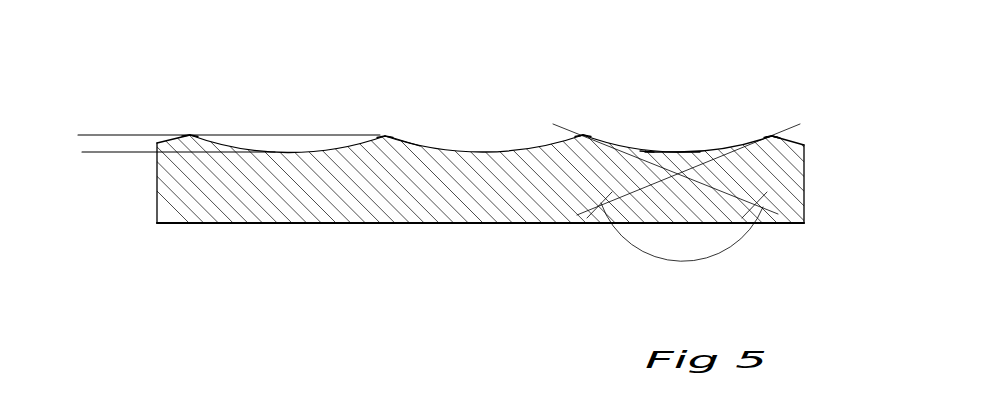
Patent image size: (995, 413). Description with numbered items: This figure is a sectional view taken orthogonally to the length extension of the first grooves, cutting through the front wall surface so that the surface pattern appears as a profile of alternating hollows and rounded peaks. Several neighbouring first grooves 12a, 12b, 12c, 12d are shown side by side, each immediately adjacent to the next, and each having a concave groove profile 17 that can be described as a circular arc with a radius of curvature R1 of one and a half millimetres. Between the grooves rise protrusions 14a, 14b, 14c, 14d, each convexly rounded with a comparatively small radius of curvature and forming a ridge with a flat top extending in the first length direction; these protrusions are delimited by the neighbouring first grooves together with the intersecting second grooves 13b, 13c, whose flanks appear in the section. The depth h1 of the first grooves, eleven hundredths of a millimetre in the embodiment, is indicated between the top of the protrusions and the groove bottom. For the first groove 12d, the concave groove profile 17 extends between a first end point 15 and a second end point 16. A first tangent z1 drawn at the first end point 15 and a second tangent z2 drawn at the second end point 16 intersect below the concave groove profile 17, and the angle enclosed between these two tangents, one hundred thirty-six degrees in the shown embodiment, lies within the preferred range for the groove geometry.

The first groove 12a is at (172, 140).
The first groove 12b is at (287, 150).
The first groove 12c is at (480, 150).
The first groove 12d is at (682, 150).
The second groove 13b is at (405, 150).
The second groove 13c is at (790, 148).
The protrusion 14a is at (190, 135).
The protrusion 14b is at (385, 135).
The protrusion 14c is at (583, 135).
The protrusion 14d is at (772, 136).
The first end point 15 is at (585, 135).
The second end point 16 is at (770, 136).
The concave groove profile 17 is at (647, 150).
The radius of curvature R1 is at (661, 128).
The first tangent z1 is at (785, 203).
The second tangent z2 is at (582, 207).
The depth h1 is at (95, 202).